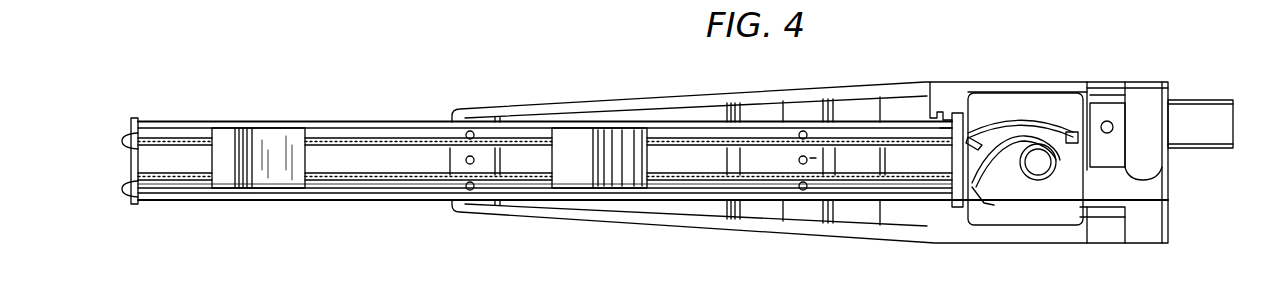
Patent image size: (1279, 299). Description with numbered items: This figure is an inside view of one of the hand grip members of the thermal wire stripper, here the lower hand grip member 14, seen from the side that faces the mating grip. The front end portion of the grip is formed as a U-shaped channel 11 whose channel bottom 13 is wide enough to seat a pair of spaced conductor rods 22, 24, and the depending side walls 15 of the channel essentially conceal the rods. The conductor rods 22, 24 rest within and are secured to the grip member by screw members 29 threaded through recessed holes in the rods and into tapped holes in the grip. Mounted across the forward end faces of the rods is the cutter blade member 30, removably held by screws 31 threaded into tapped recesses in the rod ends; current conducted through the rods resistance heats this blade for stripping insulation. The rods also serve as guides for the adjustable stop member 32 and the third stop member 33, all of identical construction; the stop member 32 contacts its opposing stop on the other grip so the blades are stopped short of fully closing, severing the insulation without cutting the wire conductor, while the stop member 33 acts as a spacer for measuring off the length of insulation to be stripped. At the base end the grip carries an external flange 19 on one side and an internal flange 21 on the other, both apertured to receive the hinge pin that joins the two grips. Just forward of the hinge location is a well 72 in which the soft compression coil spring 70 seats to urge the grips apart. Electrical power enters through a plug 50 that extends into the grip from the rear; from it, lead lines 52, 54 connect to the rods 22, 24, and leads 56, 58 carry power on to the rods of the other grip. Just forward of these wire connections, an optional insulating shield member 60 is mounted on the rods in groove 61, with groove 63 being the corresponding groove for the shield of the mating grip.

The U-shaped channel 11 is at (455, 115).
The channel bottom 13 is at (452, 204).
The hand grip member 14 is at (605, 228).
The side walls 15 is at (640, 100).
The external flange 19 is at (1087, 84).
The internal flange 21 is at (1093, 235).
The conductor rod 22 is at (352, 104).
The conductor rod 24 is at (345, 190).
The screw members 29 is at (466, 137).
The cutter blade member 30 is at (140, 152).
The screws 31 is at (126, 140).
The adjustable stop member 32 is at (568, 130).
The third stop member 33 is at (259, 110).
The plug 50 is at (1197, 100).
The lead line 52 is at (1012, 104).
The lead line 54 is at (1072, 130).
The lead 56 is at (966, 140).
The lead 58 is at (988, 196).
The shield member 60 is at (950, 158).
The groove 61 is at (960, 112).
The groove 63 is at (940, 110).
The compression coil spring 70 is at (1035, 170).
The well 72 is at (1045, 178).